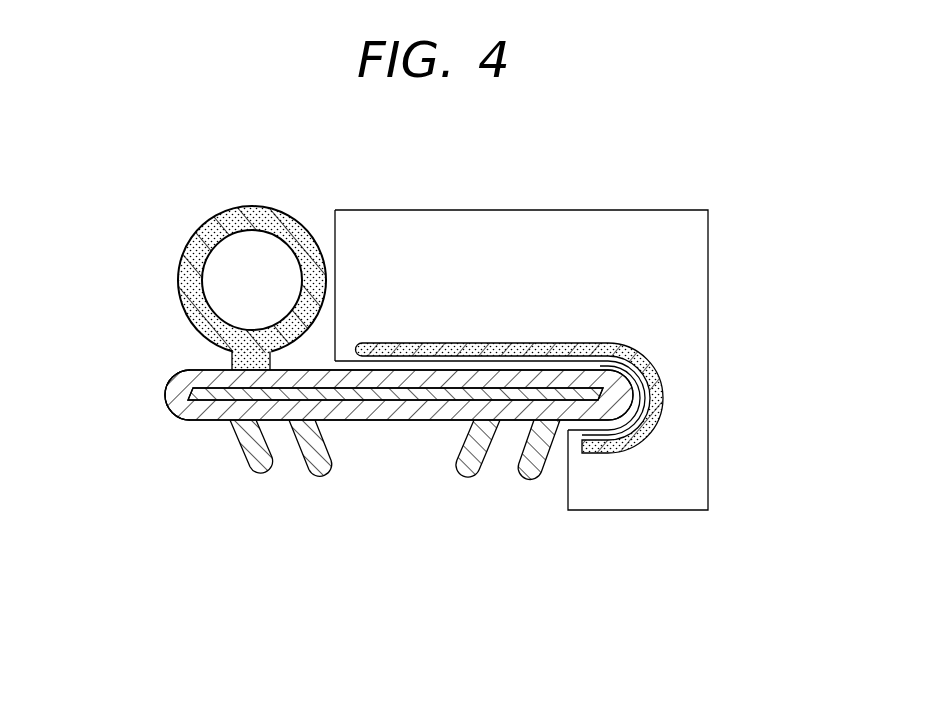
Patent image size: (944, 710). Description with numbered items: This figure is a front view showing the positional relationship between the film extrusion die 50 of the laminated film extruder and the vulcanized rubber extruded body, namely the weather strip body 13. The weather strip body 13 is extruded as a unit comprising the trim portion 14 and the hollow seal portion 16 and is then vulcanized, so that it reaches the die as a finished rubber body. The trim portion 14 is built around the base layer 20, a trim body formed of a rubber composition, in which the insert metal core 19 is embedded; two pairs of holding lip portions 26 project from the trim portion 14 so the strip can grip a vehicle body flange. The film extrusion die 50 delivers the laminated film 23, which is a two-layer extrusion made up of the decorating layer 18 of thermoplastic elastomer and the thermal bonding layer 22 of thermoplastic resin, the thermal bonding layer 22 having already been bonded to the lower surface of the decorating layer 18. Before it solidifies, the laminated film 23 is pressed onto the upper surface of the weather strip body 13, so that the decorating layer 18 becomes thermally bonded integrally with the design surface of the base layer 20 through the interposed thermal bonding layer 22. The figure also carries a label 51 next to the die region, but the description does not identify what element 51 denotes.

The weather strip body 13 is at (367, 370).
The trim portion 14 is at (282, 422).
The hollow seal portion 16 is at (180, 262).
The decorating layer 18 is at (661, 386).
The insert metal core 19 is at (192, 367).
The base layer 20 is at (195, 427).
The thermal bonding layer 22 is at (745, 350).
The laminated film 23 is at (562, 404).
The holding lip portions 26 is at (330, 474).
The film extrusion die 50 is at (527, 226).
The flange 51 is at (640, 352).